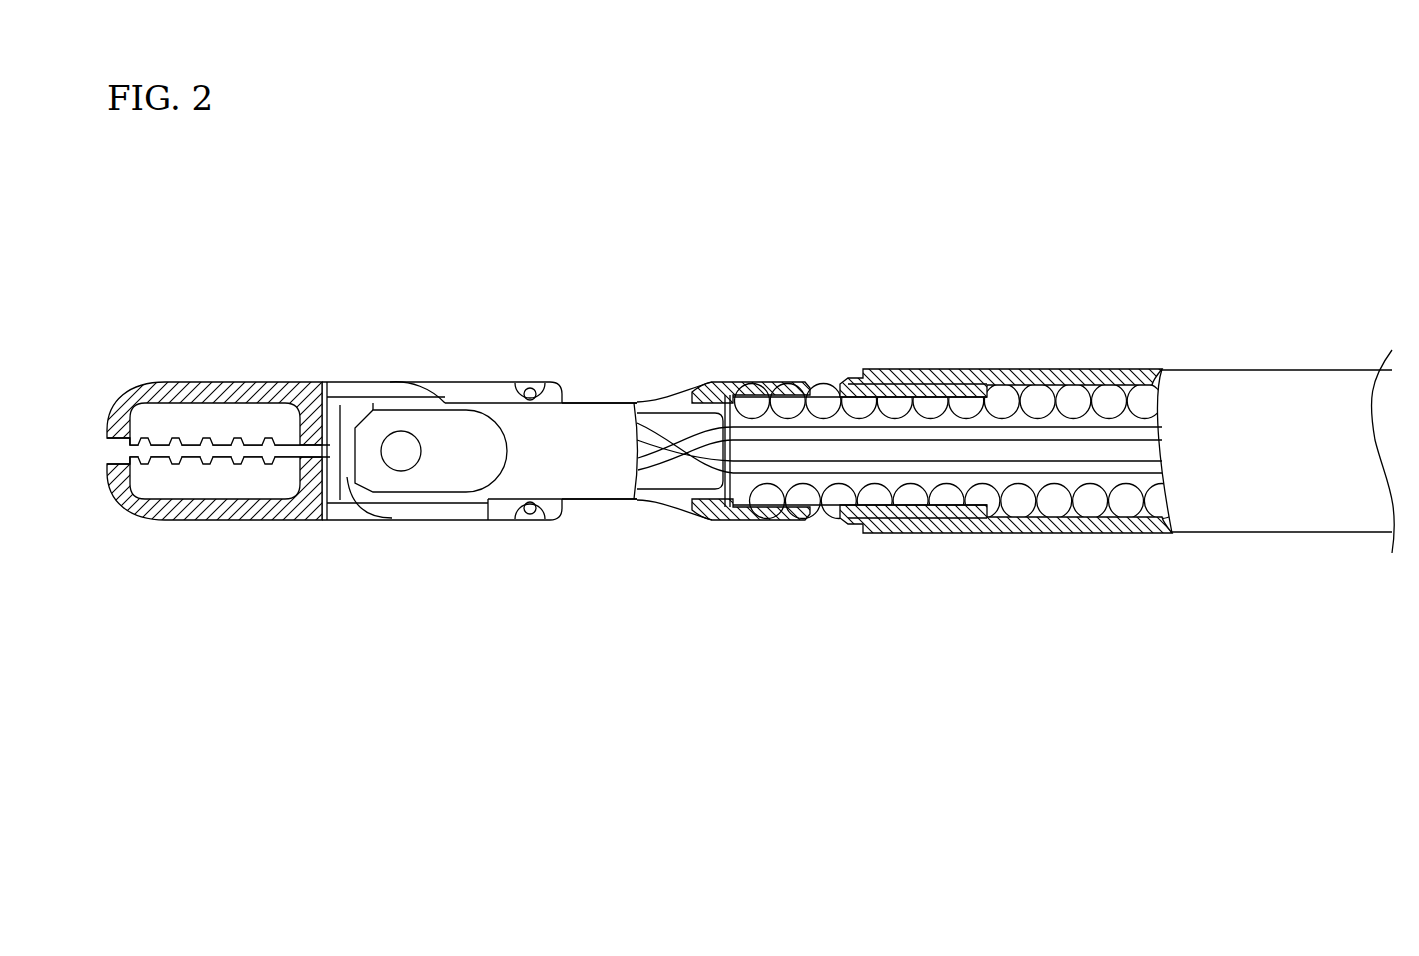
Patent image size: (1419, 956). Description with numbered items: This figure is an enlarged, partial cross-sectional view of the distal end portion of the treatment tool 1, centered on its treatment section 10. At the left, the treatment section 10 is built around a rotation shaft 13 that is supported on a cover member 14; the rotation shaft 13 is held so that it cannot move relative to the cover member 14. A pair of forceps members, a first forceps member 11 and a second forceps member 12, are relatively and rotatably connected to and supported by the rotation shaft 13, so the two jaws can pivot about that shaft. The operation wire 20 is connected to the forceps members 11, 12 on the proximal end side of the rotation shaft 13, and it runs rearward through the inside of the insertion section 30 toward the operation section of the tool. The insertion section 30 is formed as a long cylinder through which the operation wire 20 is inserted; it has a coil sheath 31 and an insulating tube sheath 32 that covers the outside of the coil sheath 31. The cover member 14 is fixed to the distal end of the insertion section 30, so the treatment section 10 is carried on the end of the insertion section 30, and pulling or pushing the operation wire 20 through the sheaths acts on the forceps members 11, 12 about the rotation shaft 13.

The treatment tool 1 is at (750, 383).
The treatment section 10 is at (372, 408).
The first forceps member 11 is at (235, 382).
The second forceps member 12 is at (240, 512).
The rotation shaft 13 is at (401, 465).
The cover member 14 is at (603, 492).
The operation wire 20 is at (831, 466).
The insertion section 30 is at (1268, 388).
The coil sheath 31 is at (1056, 505).
The insulating tube sheath 32 is at (1117, 527).